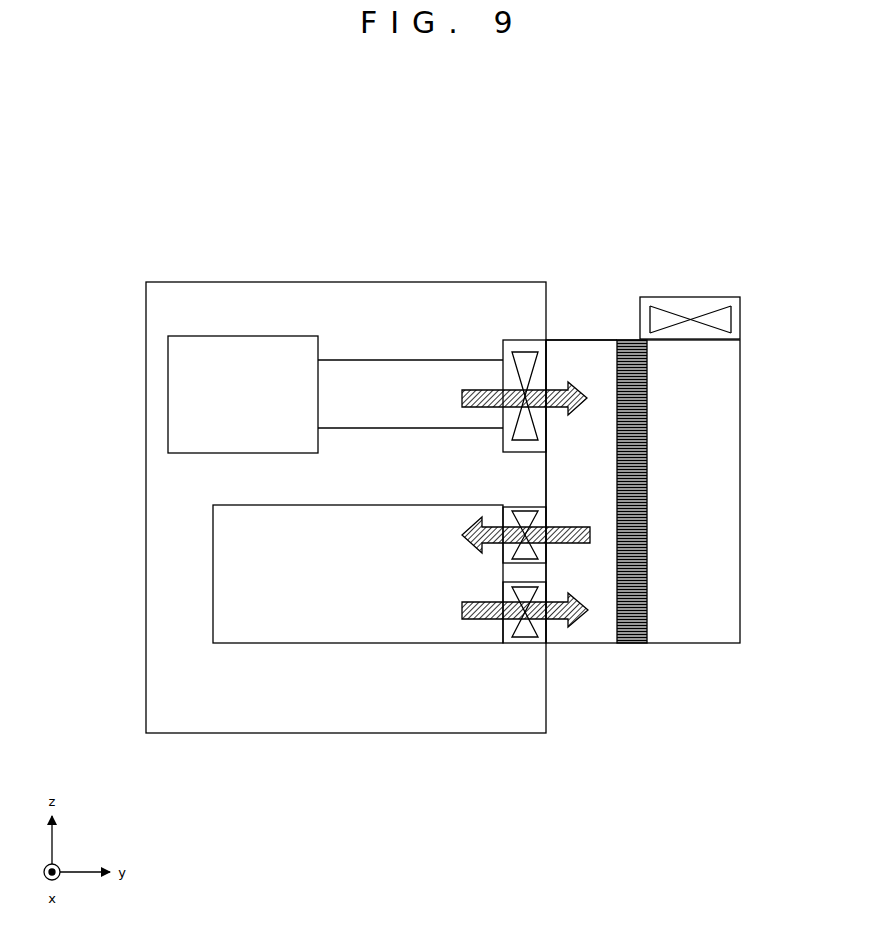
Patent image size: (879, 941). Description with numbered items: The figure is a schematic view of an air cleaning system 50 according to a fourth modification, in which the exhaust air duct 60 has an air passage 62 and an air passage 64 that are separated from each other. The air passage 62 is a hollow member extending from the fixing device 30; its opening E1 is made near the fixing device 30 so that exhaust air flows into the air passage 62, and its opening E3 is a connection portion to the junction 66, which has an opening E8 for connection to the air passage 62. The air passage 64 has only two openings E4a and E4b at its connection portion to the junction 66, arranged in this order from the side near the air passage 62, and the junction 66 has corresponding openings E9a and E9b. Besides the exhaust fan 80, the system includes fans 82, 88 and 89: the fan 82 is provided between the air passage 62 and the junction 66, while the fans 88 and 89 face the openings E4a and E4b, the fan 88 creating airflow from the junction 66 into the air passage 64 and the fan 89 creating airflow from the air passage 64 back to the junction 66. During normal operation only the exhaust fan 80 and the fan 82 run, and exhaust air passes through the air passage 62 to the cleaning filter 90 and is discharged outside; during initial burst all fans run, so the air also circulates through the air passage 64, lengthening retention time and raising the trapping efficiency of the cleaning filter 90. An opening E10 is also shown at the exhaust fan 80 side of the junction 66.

The fixing device 30 is at (238, 345).
The air cleaning system 50 is at (643, 401).
The exhaust air duct 60 is at (442, 215).
The air passage 62 is at (402, 378).
The air passage 64 is at (302, 637).
The junction 66 is at (600, 355).
The exhaust fan 80 is at (710, 303).
The fan 82 is at (525, 347).
The fan 88 is at (522, 505).
The fan 89 is at (520, 638).
The cleaning filter 90 is at (640, 645).
The opening E1 is at (318, 387).
The opening E3 is at (497, 373).
The opening E8 is at (550, 375).
The connection point E10 is at (690, 340).
The opening E4a is at (503, 550).
The opening E4b is at (503, 632).
The opening E9a is at (548, 548).
The opening E9b is at (548, 632).